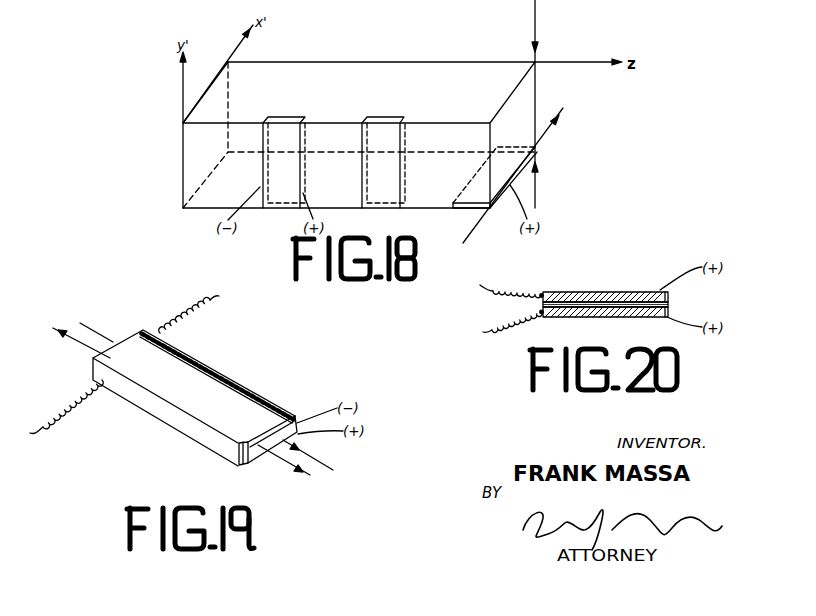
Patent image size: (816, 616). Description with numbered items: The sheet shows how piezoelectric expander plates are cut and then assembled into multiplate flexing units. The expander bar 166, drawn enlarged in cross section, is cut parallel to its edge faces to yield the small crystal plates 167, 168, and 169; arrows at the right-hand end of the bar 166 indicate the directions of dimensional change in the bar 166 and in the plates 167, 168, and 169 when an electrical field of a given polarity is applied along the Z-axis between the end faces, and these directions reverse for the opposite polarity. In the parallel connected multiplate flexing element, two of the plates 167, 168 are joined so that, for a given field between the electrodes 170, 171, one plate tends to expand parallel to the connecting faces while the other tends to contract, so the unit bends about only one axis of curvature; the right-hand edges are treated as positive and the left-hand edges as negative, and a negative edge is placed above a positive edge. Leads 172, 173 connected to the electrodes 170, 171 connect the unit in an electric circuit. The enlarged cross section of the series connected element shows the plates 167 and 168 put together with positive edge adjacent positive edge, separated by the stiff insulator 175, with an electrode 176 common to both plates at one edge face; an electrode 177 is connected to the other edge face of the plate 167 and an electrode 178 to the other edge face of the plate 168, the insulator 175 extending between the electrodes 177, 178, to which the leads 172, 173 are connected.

In FIG. 18, the expander bar 166 is at (183, 163).
In FIG. 18, the expander plate 167 is at (272, 207).
In FIG. 19, the expander plate 167 is at (248, 455).
In FIG. 20, the expander plate 167 is at (583, 295).
In FIG. 18, the expander plate 168 is at (373, 207).
In FIG. 19, the expander plate 168 is at (263, 450).
In FIG. 20, the expander plate 168 is at (617, 310).
In FIG. 18, the expander plate 169 is at (465, 207).
In FIG. 19, the electrode 170 is at (283, 412).
In FIG. 19, the electrode 171 is at (177, 432).
In FIG. 19, the lead 172 is at (44, 429).
In FIG. 20, the lead 172 is at (505, 289).
In FIG. 19, the lead 173 is at (202, 310).
In FIG. 20, the lead 173 is at (529, 318).
In FIG. 20, the insulator 175 is at (637, 300).
In FIG. 20, the common electrode 176 is at (670, 307).
In FIG. 20, the electrode 177 is at (543, 292).
In FIG. 20, the electrode 178 is at (541, 317).